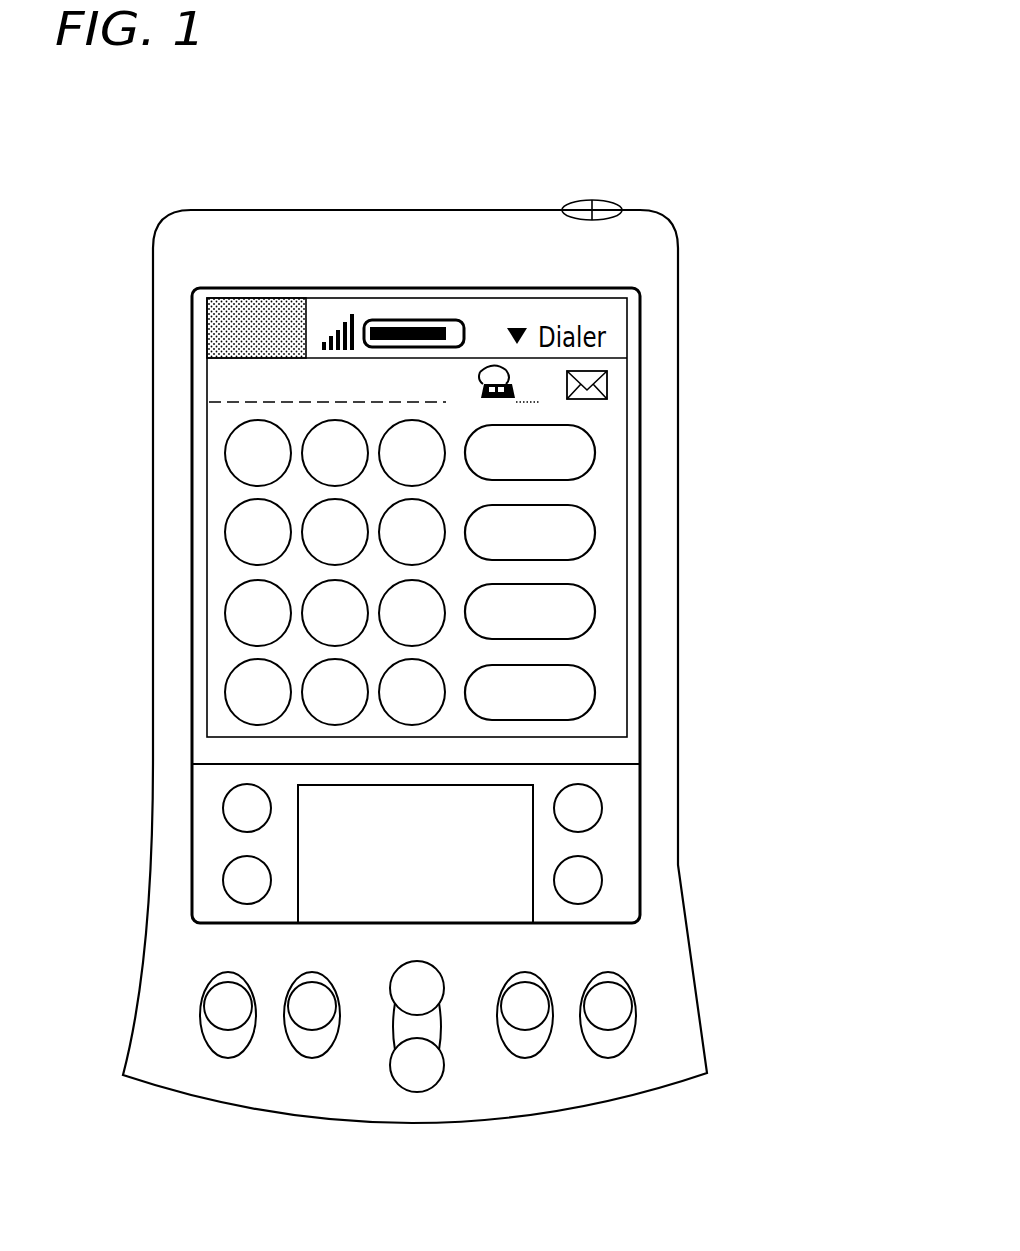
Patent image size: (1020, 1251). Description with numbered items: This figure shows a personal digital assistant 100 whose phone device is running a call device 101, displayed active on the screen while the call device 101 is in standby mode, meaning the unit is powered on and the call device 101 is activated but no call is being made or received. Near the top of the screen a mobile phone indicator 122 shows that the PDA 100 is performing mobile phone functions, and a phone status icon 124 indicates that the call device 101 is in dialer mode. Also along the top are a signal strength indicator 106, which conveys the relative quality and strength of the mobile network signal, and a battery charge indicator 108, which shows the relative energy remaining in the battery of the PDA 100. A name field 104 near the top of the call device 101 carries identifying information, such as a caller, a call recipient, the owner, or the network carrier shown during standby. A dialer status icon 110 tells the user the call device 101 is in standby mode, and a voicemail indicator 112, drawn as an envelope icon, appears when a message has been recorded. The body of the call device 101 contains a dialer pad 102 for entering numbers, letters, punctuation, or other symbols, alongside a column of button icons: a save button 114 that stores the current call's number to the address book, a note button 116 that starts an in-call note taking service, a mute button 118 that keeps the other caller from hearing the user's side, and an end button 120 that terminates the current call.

The personal digital assistant 100 is at (222, 184).
The call device 101 is at (214, 653).
The dialer pad 102 is at (228, 492).
The name field 104 is at (212, 378).
The signal strength indicator 106 is at (342, 318).
The battery charge indicator 108 is at (428, 322).
The dialer status icon 110 is at (492, 365).
The voicemail indicator 112 is at (612, 388).
The save button 114 is at (597, 458).
The note button 116 is at (597, 543).
The mute button 118 is at (597, 614).
The end button 120 is at (597, 700).
The mobile phone indicator 122 is at (210, 318).
The phone status icon 124 is at (597, 300).